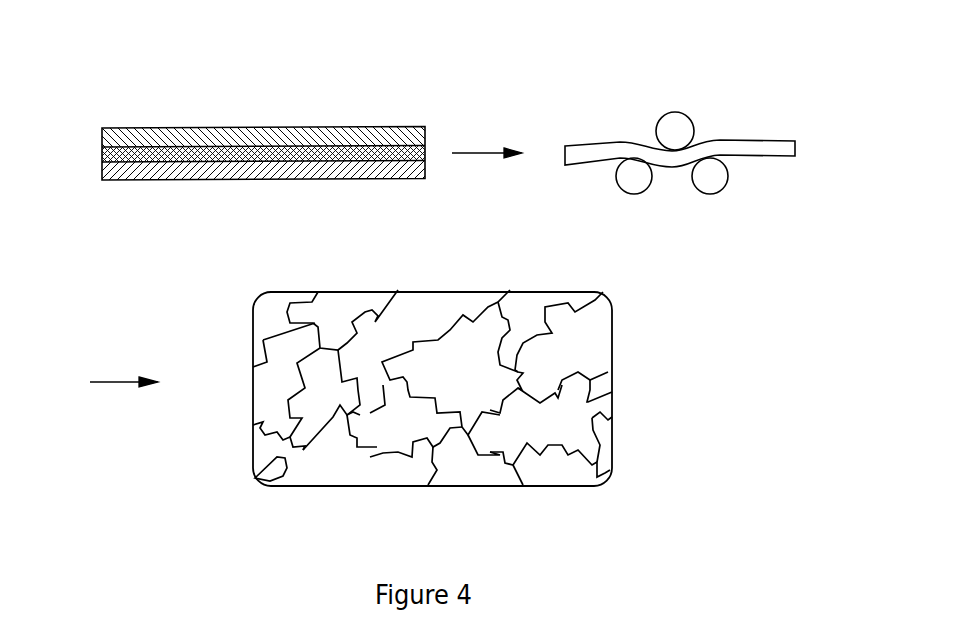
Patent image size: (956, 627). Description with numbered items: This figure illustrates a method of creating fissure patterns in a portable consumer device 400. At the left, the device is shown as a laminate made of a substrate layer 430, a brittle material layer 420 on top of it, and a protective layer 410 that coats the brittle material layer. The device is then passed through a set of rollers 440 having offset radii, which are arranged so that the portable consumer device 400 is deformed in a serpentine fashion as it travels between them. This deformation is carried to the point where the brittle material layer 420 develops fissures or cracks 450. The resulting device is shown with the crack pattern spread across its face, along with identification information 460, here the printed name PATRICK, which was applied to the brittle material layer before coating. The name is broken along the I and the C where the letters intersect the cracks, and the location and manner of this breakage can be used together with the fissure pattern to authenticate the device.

The portable consumer device 400 is at (423, 276).
The protective layer 410 is at (102, 133).
The brittle material layer 420 is at (102, 150).
The substrate layer 430 is at (102, 167).
The rollers 440 is at (676, 125).
The fissures or cracks 450 is at (612, 388).
The identification information 460 is at (262, 482).